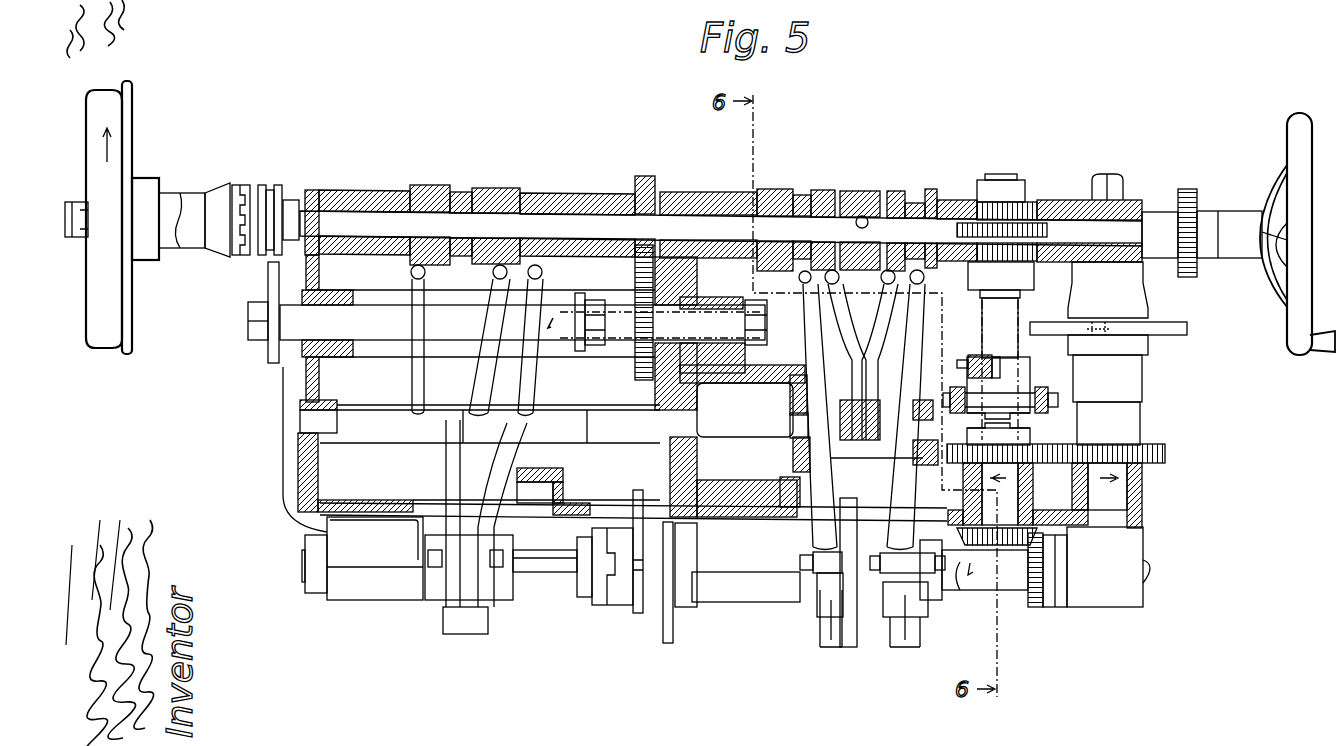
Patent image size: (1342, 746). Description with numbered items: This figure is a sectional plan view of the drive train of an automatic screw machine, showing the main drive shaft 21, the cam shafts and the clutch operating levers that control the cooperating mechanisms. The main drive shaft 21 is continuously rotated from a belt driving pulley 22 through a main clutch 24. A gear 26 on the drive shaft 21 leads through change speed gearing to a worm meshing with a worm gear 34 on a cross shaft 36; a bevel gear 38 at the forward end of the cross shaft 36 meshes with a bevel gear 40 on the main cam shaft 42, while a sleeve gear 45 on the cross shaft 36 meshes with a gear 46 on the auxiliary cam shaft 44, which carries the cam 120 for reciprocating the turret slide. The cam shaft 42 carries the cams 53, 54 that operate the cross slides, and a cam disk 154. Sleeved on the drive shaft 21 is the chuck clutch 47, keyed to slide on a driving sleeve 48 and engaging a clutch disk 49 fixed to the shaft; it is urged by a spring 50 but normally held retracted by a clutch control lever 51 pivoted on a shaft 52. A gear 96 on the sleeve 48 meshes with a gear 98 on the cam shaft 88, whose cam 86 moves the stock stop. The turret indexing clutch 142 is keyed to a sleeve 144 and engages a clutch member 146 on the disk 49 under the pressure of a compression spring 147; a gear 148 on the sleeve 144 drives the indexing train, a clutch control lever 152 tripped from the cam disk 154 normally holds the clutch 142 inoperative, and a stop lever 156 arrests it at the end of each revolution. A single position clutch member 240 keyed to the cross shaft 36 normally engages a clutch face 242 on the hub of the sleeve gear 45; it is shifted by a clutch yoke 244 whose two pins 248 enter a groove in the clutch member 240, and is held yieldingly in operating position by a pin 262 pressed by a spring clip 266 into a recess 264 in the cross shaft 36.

The main drive shaft 21 is at (615, 214).
The belt driving pulley 22 is at (105, 308).
The main clutch 24 is at (241, 185).
The gear 26 is at (1186, 189).
The worm gear 34 is at (1047, 232).
The cross shaft 36 is at (1010, 350).
The bevel gear 38 is at (997, 556).
The bevel gear 40 is at (1033, 598).
The cam shaft 42 is at (548, 583).
The auxiliary cam shaft 44 is at (1110, 500).
The sleeve gear 45 is at (943, 470).
The gear 46 is at (1165, 455).
The chuck clutch 47 is at (830, 190).
The driving sleeve 48 is at (702, 194).
The clutch disk 49 is at (870, 190).
The spring 50 is at (767, 190).
The clutch control lever 51 is at (815, 320).
The shaft 52 is at (790, 425).
The cam 53 is at (673, 618).
The cam 54 is at (628, 606).
The cam 86 is at (580, 300).
The cam shaft 88 is at (470, 322).
The gear 96 is at (653, 190).
The gear 98 is at (635, 365).
The cam 120 is at (1170, 330).
The turret indexing clutch 142 is at (948, 194).
The sleeve 144 is at (950, 258).
The clutch member 146 is at (905, 190).
The compression spring 147 is at (1015, 206).
The gear 148 is at (978, 195).
The clutch control lever 152 is at (910, 320).
The cam disk 154 is at (912, 647).
The stop lever 156 is at (905, 318).
The single position clutch member 240 is at (1005, 413).
The clutch face 242 is at (1030, 434).
The clutch yoke 244 is at (955, 387).
The pins 248 is at (944, 398).
The pin 262 is at (985, 360).
The recess 264 is at (1015, 370).
The spring clip 266 is at (962, 358).